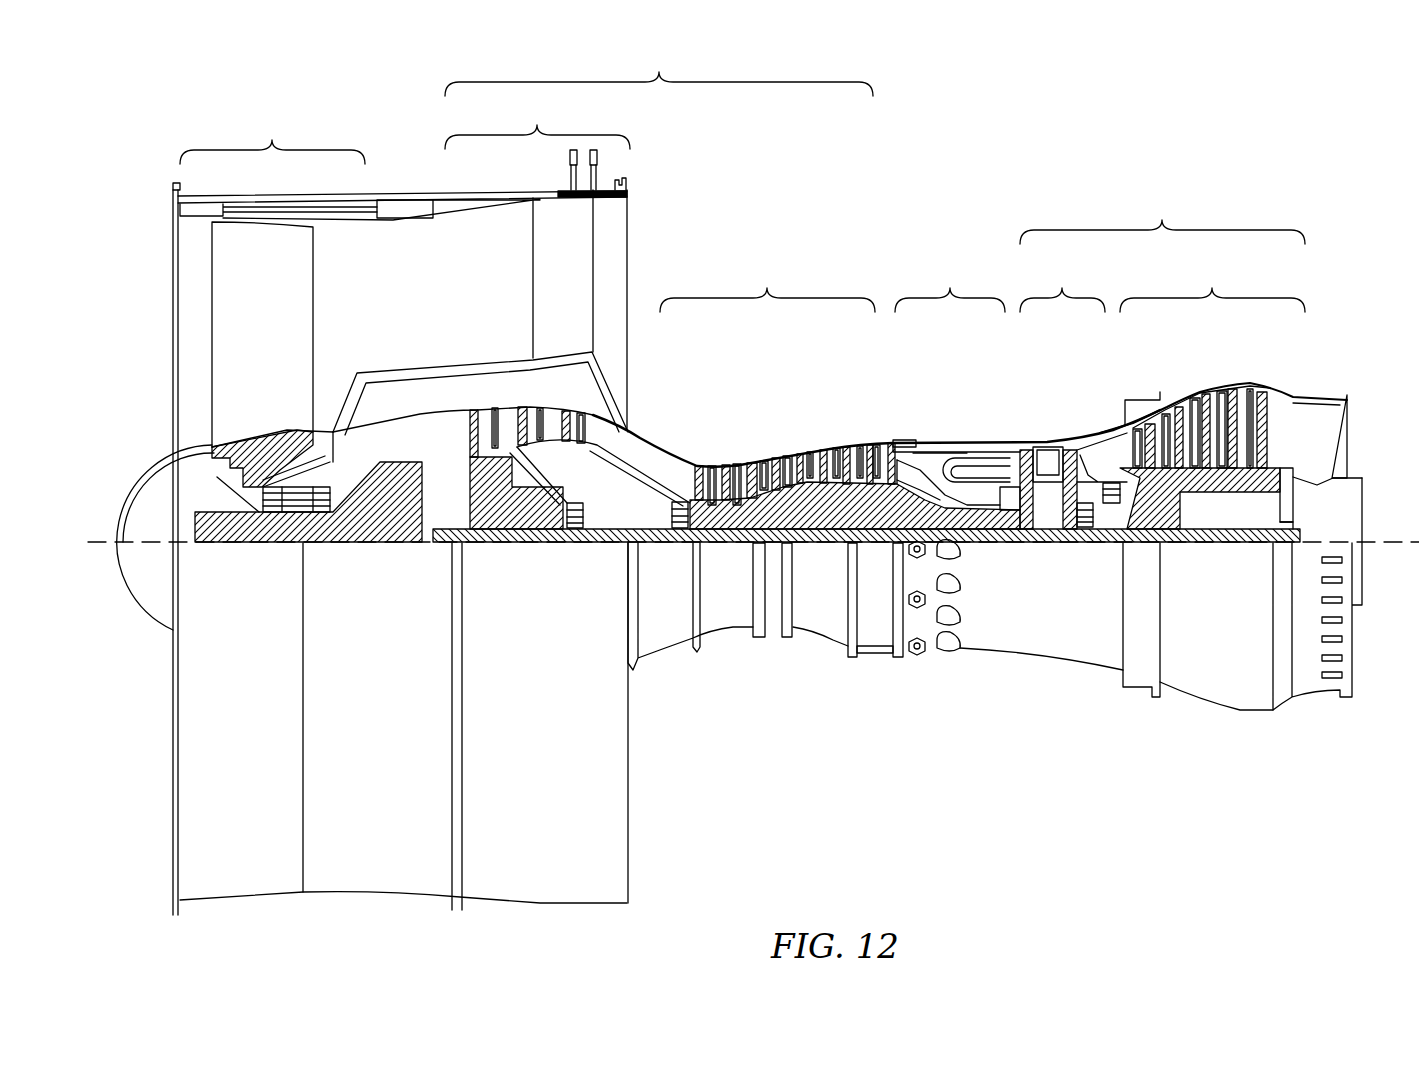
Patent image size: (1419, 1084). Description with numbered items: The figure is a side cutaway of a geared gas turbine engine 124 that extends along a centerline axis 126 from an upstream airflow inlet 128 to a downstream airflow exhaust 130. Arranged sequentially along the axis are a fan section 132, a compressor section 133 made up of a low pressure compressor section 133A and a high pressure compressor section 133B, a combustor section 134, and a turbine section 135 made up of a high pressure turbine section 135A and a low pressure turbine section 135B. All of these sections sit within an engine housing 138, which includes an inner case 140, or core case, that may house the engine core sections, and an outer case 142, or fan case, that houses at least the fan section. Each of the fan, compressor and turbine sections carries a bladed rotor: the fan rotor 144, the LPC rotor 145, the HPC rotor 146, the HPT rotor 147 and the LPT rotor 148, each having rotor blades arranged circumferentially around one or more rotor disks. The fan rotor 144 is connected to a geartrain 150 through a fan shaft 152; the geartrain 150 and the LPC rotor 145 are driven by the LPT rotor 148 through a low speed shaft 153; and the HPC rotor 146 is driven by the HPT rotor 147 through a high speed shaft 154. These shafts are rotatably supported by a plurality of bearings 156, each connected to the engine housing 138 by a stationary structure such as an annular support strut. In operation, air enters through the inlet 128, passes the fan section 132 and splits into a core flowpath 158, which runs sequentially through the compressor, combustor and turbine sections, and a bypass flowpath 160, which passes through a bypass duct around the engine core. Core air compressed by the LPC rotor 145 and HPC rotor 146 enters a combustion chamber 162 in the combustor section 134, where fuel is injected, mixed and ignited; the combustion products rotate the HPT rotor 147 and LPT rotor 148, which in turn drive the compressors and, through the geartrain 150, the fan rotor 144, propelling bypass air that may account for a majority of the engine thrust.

The gas turbine engine 124 is at (124, 186).
The centerline axis 126 is at (1415, 552).
The upstream airflow inlet 128 is at (175, 318).
The downstream airflow exhaust 130 is at (1353, 428).
The fan section 132 is at (272, 277).
The compressor section 133 is at (659, 69).
The low pressure compressor (LPC) section 133A is at (537, 276).
The high pressure compressor (HPC) section 133B is at (876, 381).
The combustor section 134 is at (956, 355).
The turbine section 135 is at (1162, 217).
The high pressure turbine (HPT) section 135A is at (1090, 370).
The low pressure turbine (LPT) section 135B is at (1223, 363).
The engine housing 138 is at (657, 676).
The inner case 140 is at (875, 650).
The outer case 142 is at (578, 903).
The fan rotor 144 is at (188, 455).
The LPC rotor 145 is at (507, 532).
The HPC rotor 146 is at (823, 530).
The HPT rotor 147 is at (1047, 532).
The LPT rotor 148 is at (1210, 487).
The geartrain 150 is at (398, 532).
The fan shaft 152 is at (246, 532).
The low speed shaft 153 is at (1220, 543).
The high speed shaft 154 is at (977, 522).
The bearings 156 is at (301, 537).
The core flowpath 158 is at (653, 460).
The bypass flowpath 160 is at (440, 301).
The combustion chamber 162 is at (962, 467).